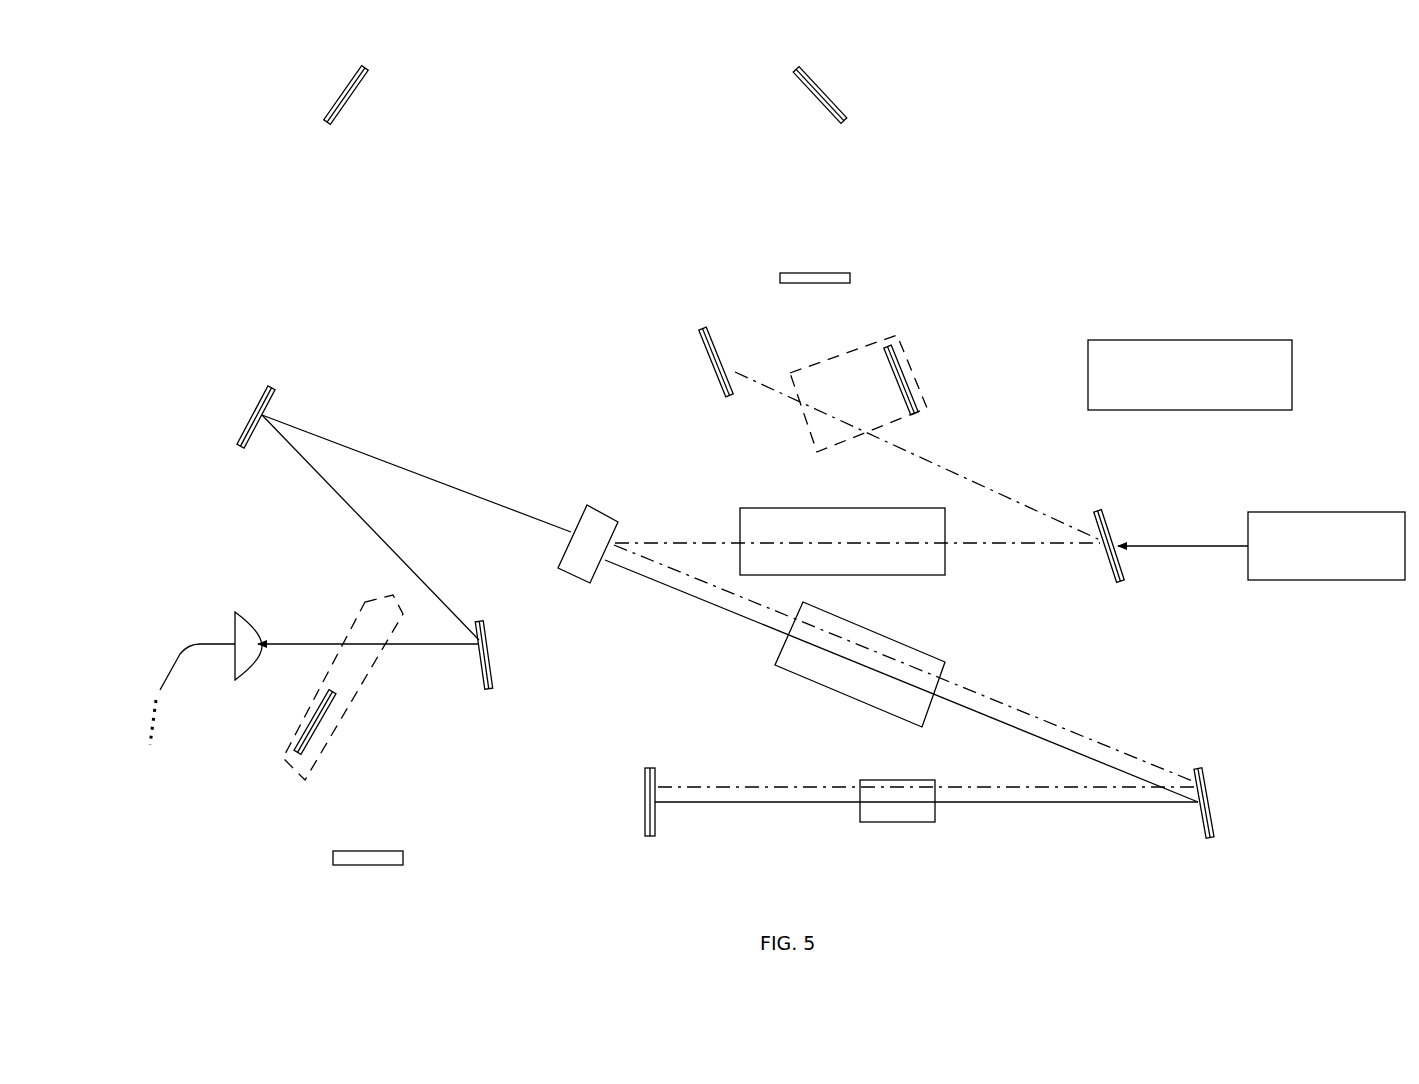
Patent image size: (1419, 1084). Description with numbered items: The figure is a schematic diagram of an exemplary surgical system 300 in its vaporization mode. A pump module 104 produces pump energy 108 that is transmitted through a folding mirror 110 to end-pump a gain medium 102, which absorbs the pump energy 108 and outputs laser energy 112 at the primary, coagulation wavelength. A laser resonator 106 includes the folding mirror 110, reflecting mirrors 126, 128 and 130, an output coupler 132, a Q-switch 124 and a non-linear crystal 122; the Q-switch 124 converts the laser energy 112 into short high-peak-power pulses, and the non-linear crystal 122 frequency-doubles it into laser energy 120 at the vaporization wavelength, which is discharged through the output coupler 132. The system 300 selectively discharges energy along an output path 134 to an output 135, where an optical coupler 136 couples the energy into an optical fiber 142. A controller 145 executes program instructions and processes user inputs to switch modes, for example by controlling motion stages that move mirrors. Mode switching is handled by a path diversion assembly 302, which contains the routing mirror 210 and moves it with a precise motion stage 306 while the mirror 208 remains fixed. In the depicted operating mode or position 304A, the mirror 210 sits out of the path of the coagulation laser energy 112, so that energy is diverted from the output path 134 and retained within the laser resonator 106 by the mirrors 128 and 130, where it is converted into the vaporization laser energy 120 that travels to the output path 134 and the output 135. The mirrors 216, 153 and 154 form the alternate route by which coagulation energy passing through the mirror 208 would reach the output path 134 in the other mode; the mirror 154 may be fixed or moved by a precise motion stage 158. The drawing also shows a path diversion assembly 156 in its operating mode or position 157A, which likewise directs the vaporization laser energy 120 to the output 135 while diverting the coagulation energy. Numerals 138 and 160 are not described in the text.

The gain medium 102 is at (762, 508).
The pump module 104 is at (1296, 512).
The laser resonator 106 is at (1175, 664).
The pump energy 108 is at (1178, 546).
The folding mirror 110 is at (1120, 512).
The laser energy 112 is at (960, 470).
The laser energy 120 is at (405, 470).
The non-linear crystal 122 is at (888, 822).
The Q-switch 124 is at (826, 694).
The reflecting mirror 126 is at (1213, 780).
The reflecting mirror 128 is at (645, 772).
The reflecting mirror 130 is at (708, 367).
The output coupler 132 is at (573, 572).
The output path 134 is at (298, 608).
The output 135 is at (208, 604).
The optical coupler 136 is at (243, 612).
The mirror 138 is at (262, 395).
The optical fiber 142 is at (175, 668).
The controller 145 is at (1242, 340).
The mirror 153 is at (343, 92).
The mirror 154 is at (315, 715).
The path diversion assembly 156 is at (262, 746).
The operating mode or position 157A is at (372, 712).
The precise motion stage 158 is at (290, 768).
The detector 160 is at (395, 851).
The mirror 208 is at (835, 272).
The routing mirror 210 is at (912, 372).
The mirror 216 is at (825, 90).
The surgical system 300 is at (1142, 258).
The path diversion assembly 302 is at (938, 336).
The operating mode or position 304A is at (942, 405).
The precise motion stage 306 is at (872, 338).